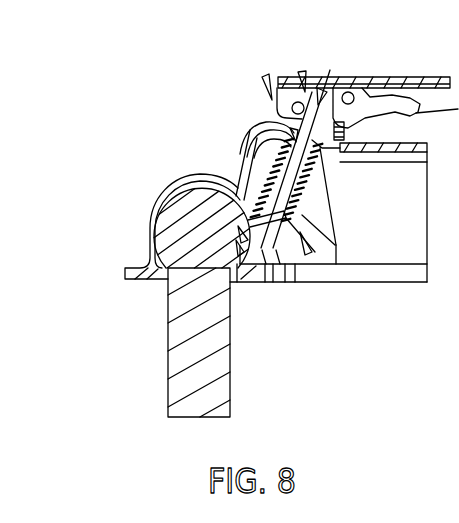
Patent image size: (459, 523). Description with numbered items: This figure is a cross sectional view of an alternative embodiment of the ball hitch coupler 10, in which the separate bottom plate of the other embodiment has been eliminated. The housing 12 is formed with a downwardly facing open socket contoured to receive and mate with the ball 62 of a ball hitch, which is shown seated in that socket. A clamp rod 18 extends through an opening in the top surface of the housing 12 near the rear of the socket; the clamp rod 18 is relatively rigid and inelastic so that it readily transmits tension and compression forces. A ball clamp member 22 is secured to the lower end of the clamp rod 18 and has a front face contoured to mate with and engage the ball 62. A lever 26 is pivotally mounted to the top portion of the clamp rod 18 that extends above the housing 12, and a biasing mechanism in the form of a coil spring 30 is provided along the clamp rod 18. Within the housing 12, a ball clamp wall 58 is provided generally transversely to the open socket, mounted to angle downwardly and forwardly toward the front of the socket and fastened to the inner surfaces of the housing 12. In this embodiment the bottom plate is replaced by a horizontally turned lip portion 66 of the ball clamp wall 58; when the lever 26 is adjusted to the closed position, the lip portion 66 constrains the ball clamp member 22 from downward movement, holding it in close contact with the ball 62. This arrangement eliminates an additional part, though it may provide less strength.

The ball hitch coupler 10 is at (112, 152).
The housing 12 is at (148, 213).
The ball 62 is at (172, 229).
The coil spring 30 is at (260, 160).
The ball clamp wall 58 is at (313, 203).
The clamp rod 18 is at (315, 222).
The lever 26 is at (402, 77).
The ball clamp member 22 is at (340, 315).
The lip portion 66 is at (278, 253).